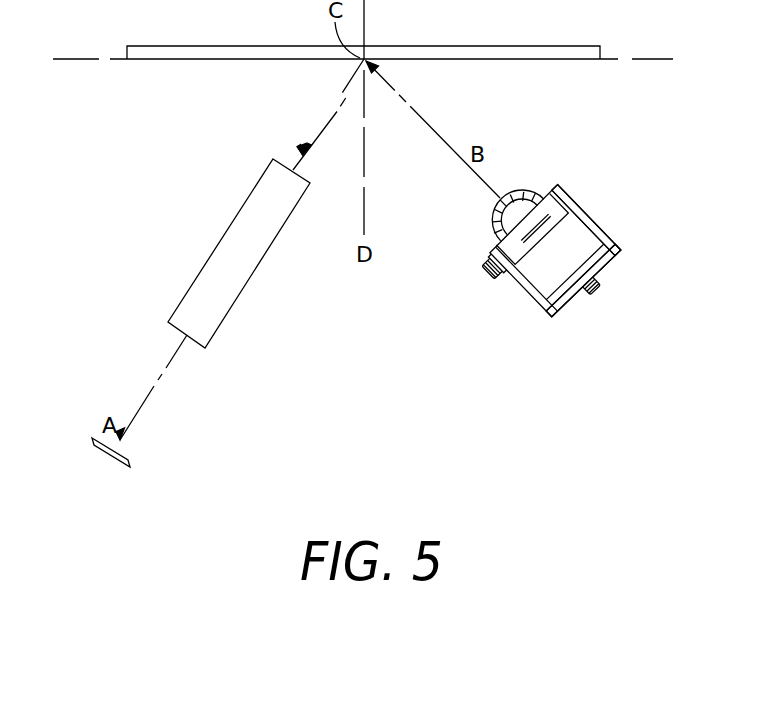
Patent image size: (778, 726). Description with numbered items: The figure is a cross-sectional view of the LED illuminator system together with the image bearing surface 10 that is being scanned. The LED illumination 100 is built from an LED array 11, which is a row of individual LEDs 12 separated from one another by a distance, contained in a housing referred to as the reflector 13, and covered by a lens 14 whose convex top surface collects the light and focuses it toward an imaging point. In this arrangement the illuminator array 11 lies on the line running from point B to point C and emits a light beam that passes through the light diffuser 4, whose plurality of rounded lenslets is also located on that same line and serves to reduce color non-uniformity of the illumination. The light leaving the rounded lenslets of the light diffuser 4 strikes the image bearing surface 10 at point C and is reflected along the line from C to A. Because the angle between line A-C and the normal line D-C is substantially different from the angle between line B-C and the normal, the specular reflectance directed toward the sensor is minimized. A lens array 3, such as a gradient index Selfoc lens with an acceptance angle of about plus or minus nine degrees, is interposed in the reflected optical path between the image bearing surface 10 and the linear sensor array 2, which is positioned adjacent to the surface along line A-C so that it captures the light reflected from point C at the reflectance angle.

The image bearing surface 10 is at (517, 46).
The LED illumination 100 is at (554, 236).
The lens 14 is at (512, 209).
The reflector 13 is at (586, 220).
The LED array 11 is at (592, 286).
The LEDs 12 is at (583, 280).
The light diffuser 4 is at (532, 229).
The lens array 3 is at (200, 272).
The linear sensor array 2 is at (105, 447).